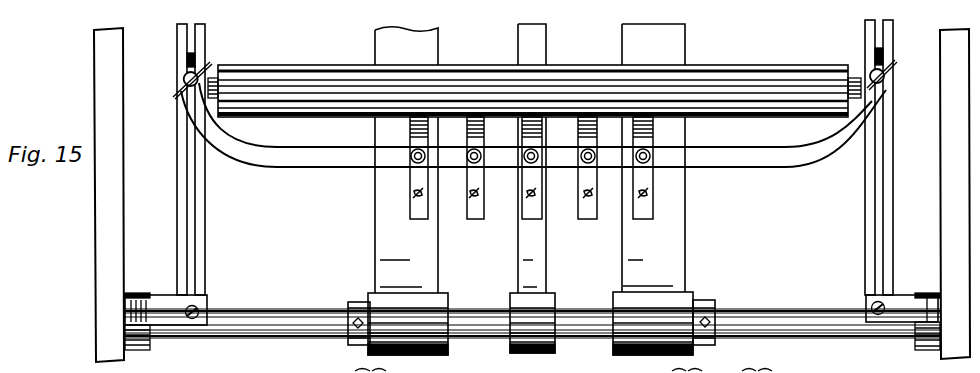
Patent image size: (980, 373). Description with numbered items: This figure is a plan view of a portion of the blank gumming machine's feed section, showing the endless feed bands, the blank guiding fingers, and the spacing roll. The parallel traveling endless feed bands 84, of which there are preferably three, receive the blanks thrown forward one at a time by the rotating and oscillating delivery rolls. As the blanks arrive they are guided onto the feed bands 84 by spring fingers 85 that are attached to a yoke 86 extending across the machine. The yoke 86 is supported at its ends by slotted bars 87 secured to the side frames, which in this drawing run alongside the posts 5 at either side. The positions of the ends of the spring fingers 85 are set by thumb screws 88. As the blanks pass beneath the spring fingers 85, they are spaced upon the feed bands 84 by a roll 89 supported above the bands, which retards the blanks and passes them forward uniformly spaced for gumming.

The post 5 is at (532, 195).
The endless feed bands 84 is at (560, 262).
The spring fingers 85 is at (410, 130).
The yoke 86 is at (807, 153).
The slotted bars 87 is at (207, 236).
The thumb screws 88 is at (414, 198).
The spacing roll 89 is at (742, 73).